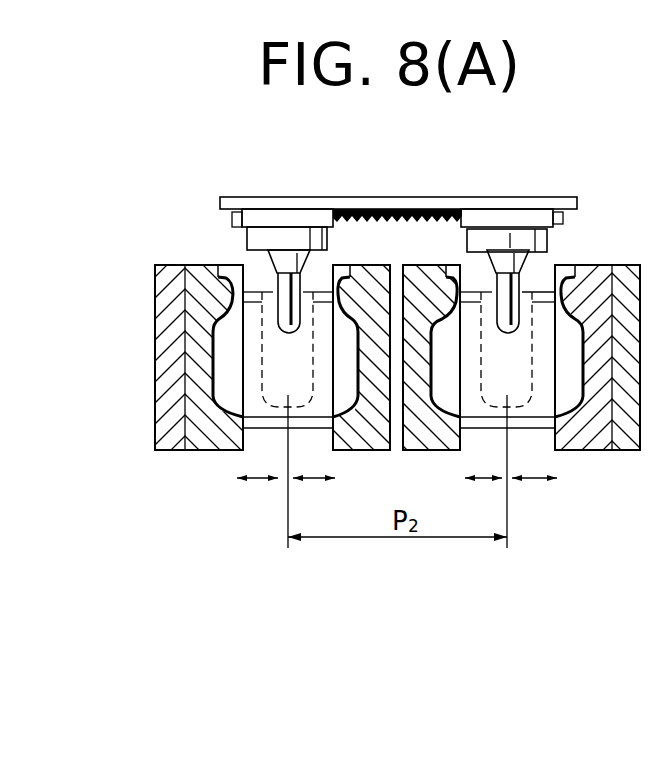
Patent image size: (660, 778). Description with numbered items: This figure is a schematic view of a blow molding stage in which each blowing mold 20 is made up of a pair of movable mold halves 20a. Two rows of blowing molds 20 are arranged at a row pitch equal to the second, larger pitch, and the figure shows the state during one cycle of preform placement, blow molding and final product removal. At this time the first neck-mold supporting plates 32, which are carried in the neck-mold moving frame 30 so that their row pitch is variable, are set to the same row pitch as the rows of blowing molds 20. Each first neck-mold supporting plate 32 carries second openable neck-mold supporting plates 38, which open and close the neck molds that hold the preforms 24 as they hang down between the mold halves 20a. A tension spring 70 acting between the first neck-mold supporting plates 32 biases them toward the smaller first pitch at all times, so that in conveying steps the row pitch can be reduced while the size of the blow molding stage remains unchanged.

The neck-mold moving frame 30 is at (425, 206).
The first neck-mold supporting plate 32 is at (299, 219).
The tension spring 70 is at (368, 214).
The second openable neck-mold supporting plate 38 is at (257, 241).
The preform 24 is at (288, 335).
The mold half 20a is at (204, 440).
The blowing mold 20 is at (273, 499).